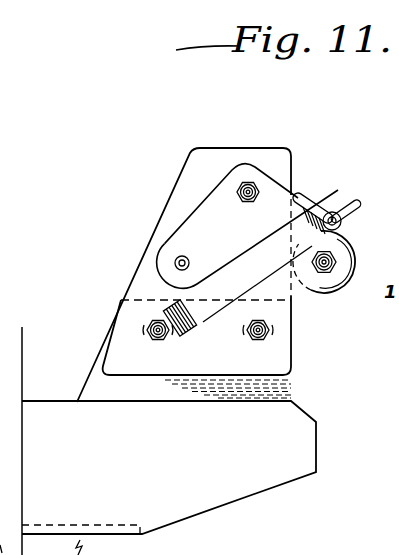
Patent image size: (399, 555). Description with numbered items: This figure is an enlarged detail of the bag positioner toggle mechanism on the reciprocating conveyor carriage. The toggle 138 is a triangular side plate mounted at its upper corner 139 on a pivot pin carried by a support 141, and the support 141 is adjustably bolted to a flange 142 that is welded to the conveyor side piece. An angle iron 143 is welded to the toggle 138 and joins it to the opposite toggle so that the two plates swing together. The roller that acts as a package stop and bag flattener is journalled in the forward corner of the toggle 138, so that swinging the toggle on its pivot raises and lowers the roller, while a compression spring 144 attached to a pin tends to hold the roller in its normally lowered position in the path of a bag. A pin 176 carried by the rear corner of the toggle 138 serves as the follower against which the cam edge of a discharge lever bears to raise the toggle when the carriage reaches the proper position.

The toggle 138 is at (247, 226).
The upper corner 139 is at (297, 141).
The support 141 is at (193, 165).
The flange 142 is at (125, 367).
The angle iron 143 is at (328, 200).
The compression spring 144 is at (253, 275).
The pin 176 is at (175, 262).